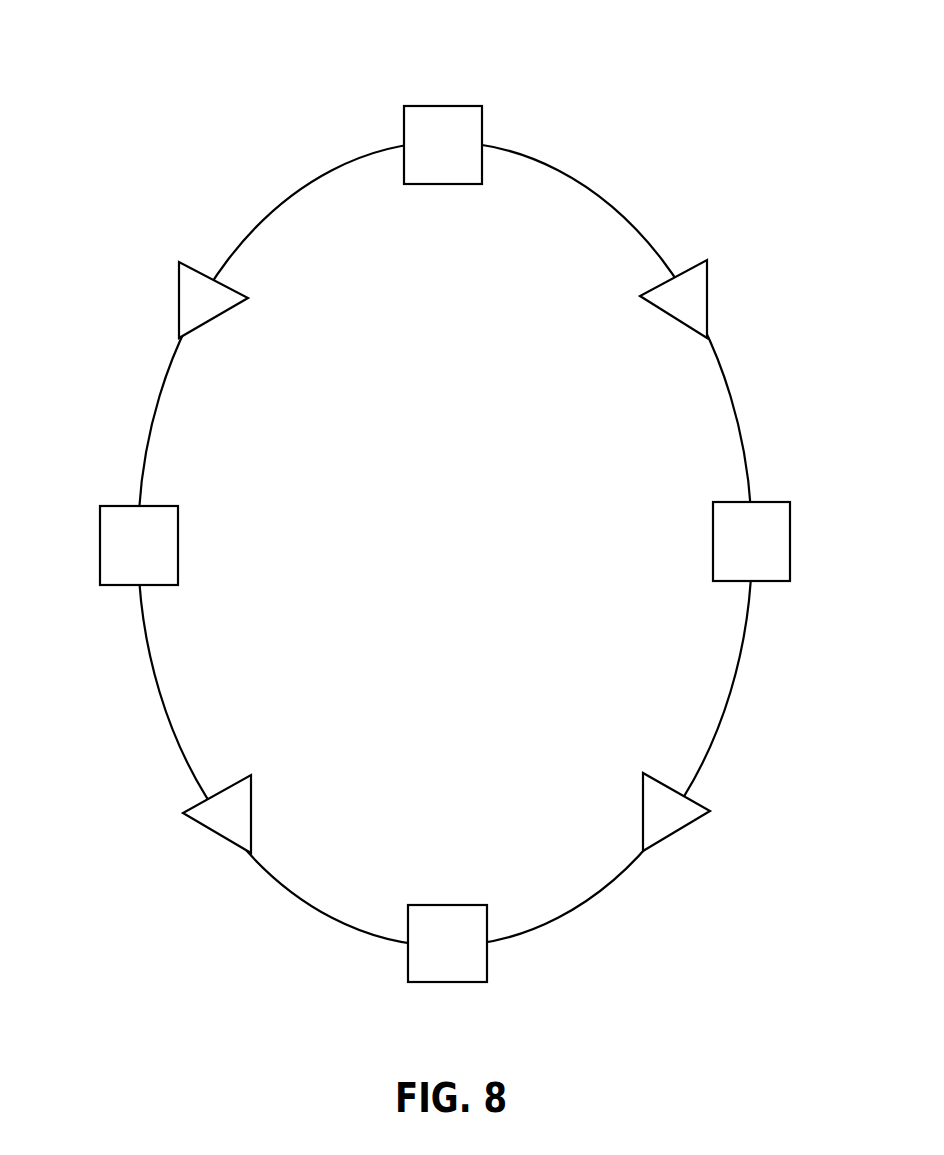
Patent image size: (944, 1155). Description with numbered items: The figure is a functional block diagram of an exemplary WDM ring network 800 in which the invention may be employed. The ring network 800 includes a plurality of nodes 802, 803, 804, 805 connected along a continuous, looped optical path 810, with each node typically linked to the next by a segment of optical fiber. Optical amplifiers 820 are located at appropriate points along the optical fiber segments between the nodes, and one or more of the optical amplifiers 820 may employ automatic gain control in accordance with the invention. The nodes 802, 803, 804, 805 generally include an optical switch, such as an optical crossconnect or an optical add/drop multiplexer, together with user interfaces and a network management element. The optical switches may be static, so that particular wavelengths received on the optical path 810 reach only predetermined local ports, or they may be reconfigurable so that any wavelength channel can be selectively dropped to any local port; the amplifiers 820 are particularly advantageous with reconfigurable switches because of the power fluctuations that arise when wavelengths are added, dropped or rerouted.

The WDM ring network 800 is at (214, 81).
The node 802 is at (443, 106).
The node 803 is at (790, 542).
The node 804 is at (447, 905).
The node 805 is at (100, 546).
The optical path 810 is at (732, 402).
The optical amplifier 820 is at (179, 295).